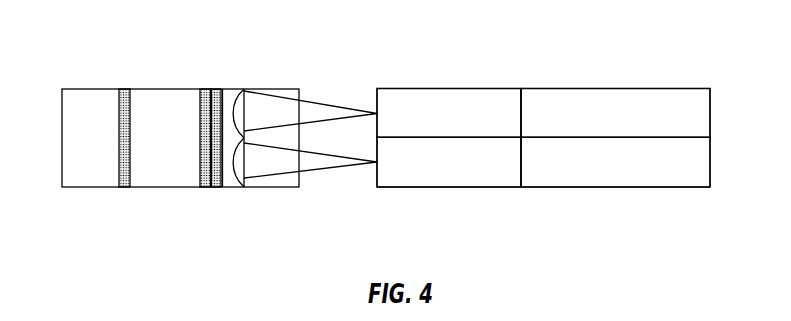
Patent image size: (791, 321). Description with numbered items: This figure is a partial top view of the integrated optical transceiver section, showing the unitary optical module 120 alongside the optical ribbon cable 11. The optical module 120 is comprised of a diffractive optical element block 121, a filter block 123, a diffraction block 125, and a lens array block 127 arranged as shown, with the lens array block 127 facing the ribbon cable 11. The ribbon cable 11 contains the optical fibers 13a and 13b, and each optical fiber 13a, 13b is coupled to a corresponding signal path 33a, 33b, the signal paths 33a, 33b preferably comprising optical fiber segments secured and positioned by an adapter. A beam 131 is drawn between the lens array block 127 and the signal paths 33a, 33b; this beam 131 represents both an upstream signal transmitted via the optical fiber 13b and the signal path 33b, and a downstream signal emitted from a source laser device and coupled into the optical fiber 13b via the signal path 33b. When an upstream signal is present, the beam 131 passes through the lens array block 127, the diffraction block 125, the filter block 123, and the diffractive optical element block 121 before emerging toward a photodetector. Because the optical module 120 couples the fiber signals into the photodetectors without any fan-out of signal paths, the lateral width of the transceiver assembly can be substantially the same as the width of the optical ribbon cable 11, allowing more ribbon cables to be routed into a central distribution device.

The unitary optical module 120 is at (156, 197).
The diffractive optical element block 121 is at (98, 88).
The filter block 123 is at (163, 88).
The diffraction block 125 is at (232, 88).
The lens array block 127 is at (273, 89).
The beam 131 is at (315, 173).
The optical ribbon cable 11 is at (407, 89).
The signal path 33a is at (440, 103).
The signal path 33b is at (440, 170).
The optical fiber 13a is at (590, 103).
The optical fiber 13b is at (590, 170).